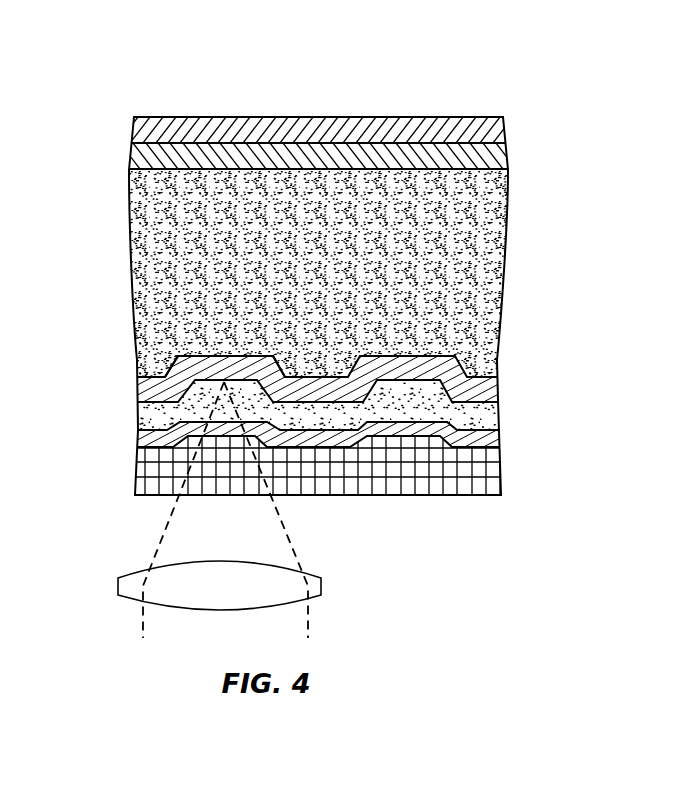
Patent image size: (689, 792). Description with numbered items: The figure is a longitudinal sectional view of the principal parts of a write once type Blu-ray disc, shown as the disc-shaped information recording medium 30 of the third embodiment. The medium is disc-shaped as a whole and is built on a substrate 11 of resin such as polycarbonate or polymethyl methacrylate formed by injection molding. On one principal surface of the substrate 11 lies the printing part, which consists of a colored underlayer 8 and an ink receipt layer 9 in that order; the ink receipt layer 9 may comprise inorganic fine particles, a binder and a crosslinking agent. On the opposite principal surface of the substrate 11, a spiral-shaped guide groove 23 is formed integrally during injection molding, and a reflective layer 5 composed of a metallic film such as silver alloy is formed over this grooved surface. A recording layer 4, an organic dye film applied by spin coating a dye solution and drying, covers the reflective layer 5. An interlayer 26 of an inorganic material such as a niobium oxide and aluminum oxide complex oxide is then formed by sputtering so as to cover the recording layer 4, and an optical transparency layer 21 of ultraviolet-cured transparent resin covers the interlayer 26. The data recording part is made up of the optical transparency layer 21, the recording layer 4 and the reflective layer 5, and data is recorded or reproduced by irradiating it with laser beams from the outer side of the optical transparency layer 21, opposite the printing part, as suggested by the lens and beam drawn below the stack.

The disc-shaped information recording medium 30 is at (131, 76).
The ink receipt layer 9 is at (495, 128).
The colored underlayer 8 is at (142, 158).
The substrate 11 is at (497, 253).
The guide groove 23 is at (186, 346).
The reflective layer 5 is at (153, 395).
The recording layer 4 is at (490, 410).
The interlayer 26 is at (153, 438).
The optical transparency layer 21 is at (490, 472).